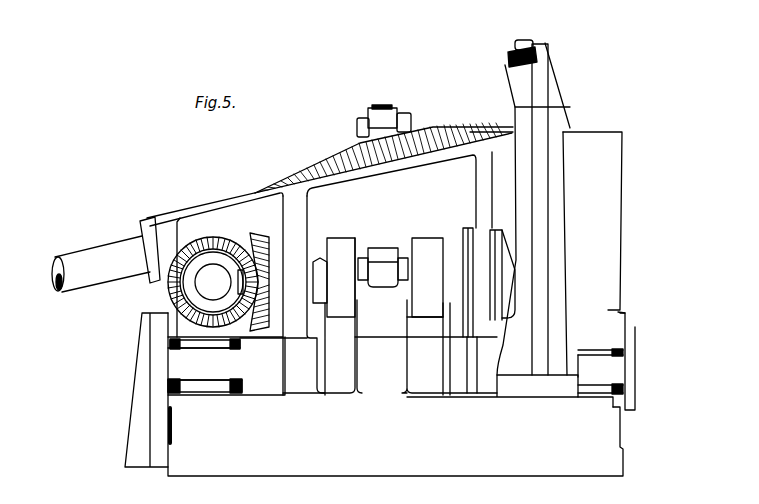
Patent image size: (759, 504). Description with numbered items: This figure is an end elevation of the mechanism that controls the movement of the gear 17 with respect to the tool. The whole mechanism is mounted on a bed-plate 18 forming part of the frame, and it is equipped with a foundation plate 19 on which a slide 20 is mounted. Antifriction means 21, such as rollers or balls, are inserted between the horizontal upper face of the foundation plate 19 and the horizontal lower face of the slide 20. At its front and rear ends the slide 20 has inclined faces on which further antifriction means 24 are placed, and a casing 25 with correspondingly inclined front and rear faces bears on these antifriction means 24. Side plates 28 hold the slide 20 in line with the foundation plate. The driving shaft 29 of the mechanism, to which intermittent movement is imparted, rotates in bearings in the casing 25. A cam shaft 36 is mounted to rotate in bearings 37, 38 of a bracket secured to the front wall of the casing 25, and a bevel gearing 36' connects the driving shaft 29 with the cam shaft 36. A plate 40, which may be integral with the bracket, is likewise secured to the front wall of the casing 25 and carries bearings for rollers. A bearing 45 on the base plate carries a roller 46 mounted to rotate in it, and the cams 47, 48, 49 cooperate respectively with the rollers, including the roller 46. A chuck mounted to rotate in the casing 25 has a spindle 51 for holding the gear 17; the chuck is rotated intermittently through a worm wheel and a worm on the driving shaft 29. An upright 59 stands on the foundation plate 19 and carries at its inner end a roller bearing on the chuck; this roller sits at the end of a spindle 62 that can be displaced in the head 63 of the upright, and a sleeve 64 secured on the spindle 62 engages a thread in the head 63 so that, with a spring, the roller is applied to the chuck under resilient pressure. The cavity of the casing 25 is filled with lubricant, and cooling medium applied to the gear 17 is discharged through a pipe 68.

The gear 17 is at (317, 164).
The bed-plate 18 is at (205, 467).
The foundation plate 19 is at (613, 407).
The slide 20 is at (177, 357).
The antifriction means 21 is at (218, 390).
The antifriction means 24 is at (222, 340).
The casing 25 is at (610, 206).
The side plates 28 is at (132, 428).
The driving shaft 29 is at (203, 285).
The cam shaft 36 is at (354, 261).
The bevel gearing 36' is at (243, 245).
The bearing 37 is at (295, 337).
The bearing 38 is at (478, 338).
The plate 40 is at (425, 192).
The bearing 45 is at (378, 358).
The roller 46 is at (387, 285).
The cam 47 is at (337, 246).
The cam 48 is at (388, 250).
The cam 49 is at (437, 242).
The spindle 51 is at (388, 104).
The upright 59 is at (561, 173).
The spindle 62 is at (528, 42).
The head 63 is at (557, 86).
The sleeve 64 is at (508, 56).
The pipe 68 is at (60, 290).